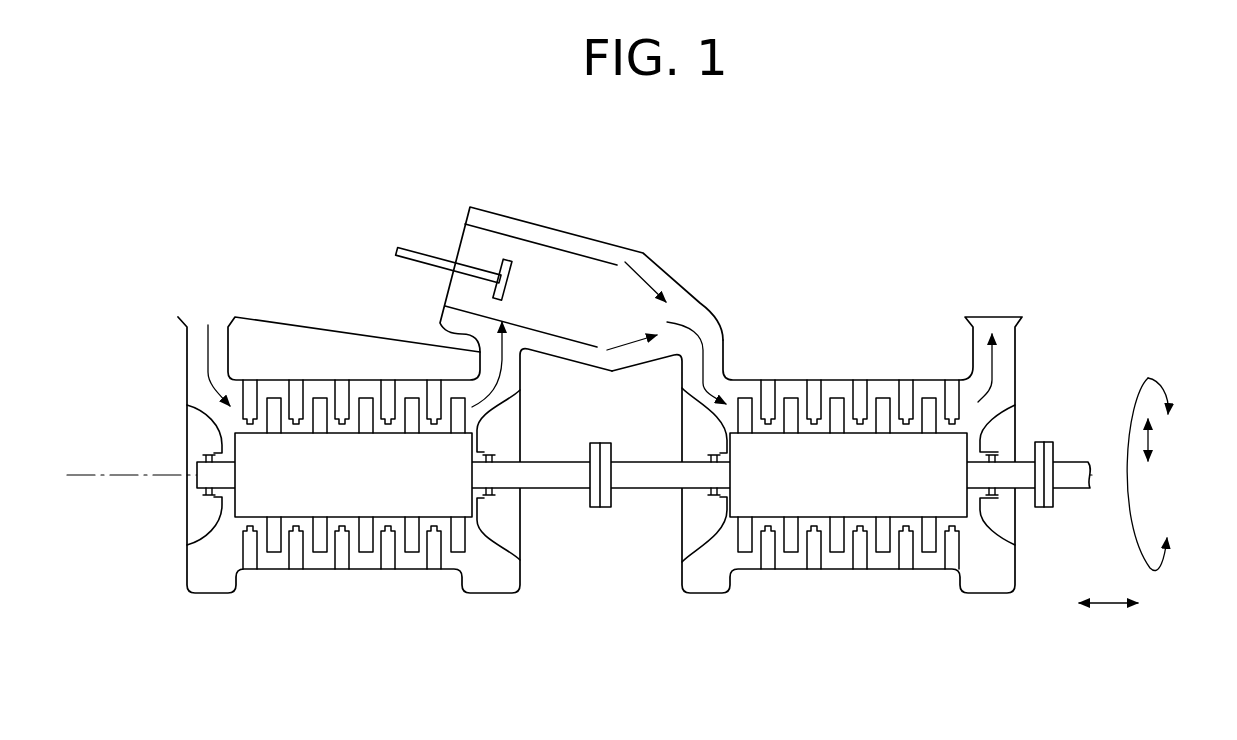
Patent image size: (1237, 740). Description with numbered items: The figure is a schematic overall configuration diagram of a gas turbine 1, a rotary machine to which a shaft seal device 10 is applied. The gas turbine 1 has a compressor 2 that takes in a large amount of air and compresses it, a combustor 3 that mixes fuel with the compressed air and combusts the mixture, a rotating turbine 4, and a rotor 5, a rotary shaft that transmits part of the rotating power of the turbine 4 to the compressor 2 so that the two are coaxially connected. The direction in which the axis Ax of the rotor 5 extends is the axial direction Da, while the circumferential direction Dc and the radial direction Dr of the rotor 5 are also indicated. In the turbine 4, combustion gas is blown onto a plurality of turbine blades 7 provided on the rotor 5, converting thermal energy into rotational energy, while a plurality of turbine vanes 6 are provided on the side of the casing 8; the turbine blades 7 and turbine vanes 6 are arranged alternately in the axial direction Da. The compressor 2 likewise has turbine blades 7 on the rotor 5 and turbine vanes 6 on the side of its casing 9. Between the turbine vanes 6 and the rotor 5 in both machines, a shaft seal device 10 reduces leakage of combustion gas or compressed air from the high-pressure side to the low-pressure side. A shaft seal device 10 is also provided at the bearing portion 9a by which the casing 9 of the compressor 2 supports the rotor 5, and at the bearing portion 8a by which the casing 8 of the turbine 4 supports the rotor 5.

The gas turbine 1 is at (954, 239).
The compressor 2 is at (522, 622).
The combustor 3 is at (725, 182).
The turbine 4 is at (1015, 622).
The rotor 5 is at (623, 489).
The turbine vane 6 is at (342, 400).
The turbine blade 7 is at (322, 393).
The casing 8 is at (788, 570).
The bearing portion 8a is at (710, 530).
The casing 9 is at (297, 570).
The bearing portion 9a is at (214, 416).
The shaft seal device 10 is at (342, 422).
The axis Ax is at (88, 472).
The circumferential direction Dc is at (1150, 377).
The radial direction Dr is at (1153, 442).
The axial direction Da is at (1108, 625).